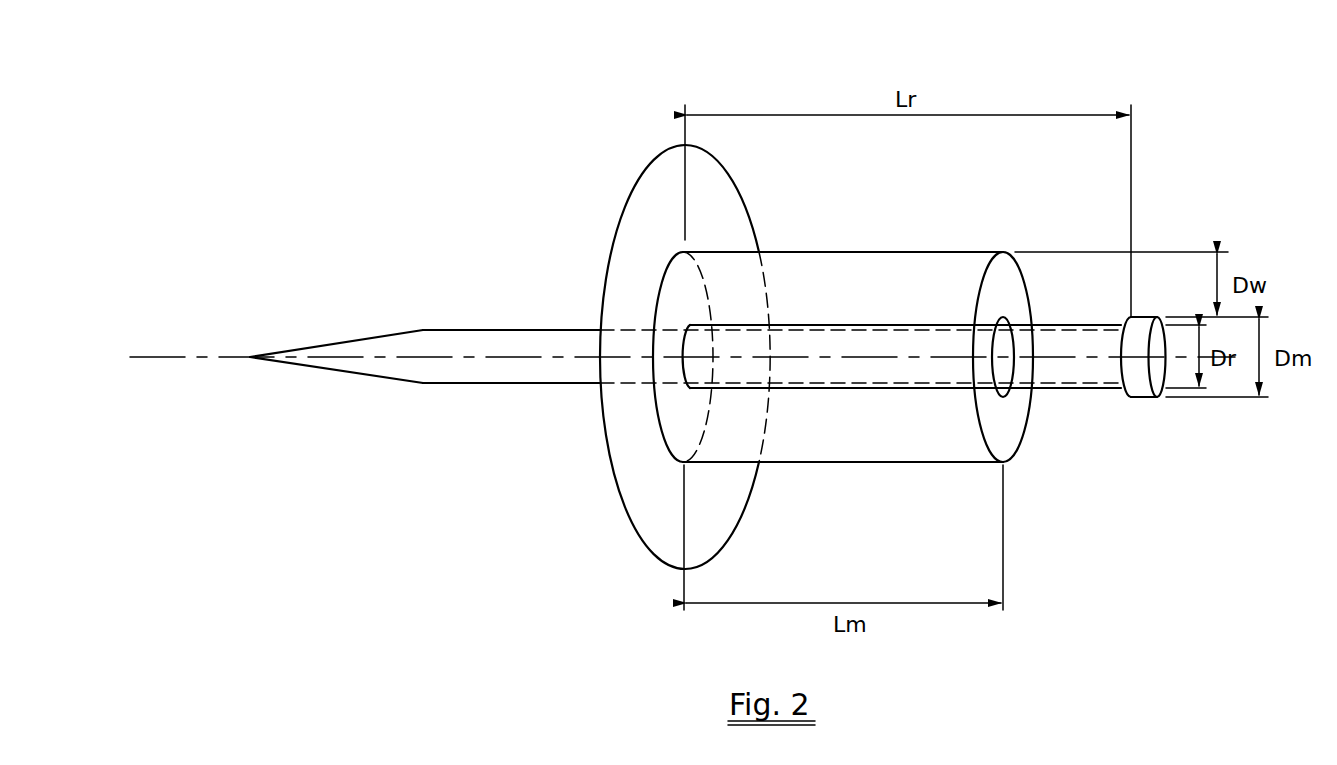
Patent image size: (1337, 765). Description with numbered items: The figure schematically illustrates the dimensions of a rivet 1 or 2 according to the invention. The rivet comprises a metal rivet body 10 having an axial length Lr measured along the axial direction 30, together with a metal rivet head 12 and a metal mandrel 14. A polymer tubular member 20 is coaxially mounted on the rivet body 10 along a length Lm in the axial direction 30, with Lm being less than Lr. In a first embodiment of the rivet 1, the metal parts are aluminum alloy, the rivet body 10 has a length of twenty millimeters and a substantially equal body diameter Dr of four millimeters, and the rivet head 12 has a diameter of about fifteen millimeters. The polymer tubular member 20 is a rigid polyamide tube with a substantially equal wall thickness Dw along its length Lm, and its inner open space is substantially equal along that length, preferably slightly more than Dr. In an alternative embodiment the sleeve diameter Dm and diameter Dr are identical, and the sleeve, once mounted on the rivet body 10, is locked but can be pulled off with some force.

The rivet 1 is at (650, 293).
The rivet 2 is at (880, 77).
The metal rivet body 10 is at (1040, 373).
The metal rivet head 12 is at (655, 190).
The metal mandrel 14 is at (627, 333).
The polymer tubular member 20 is at (895, 302).
The axial direction 30 is at (190, 355).